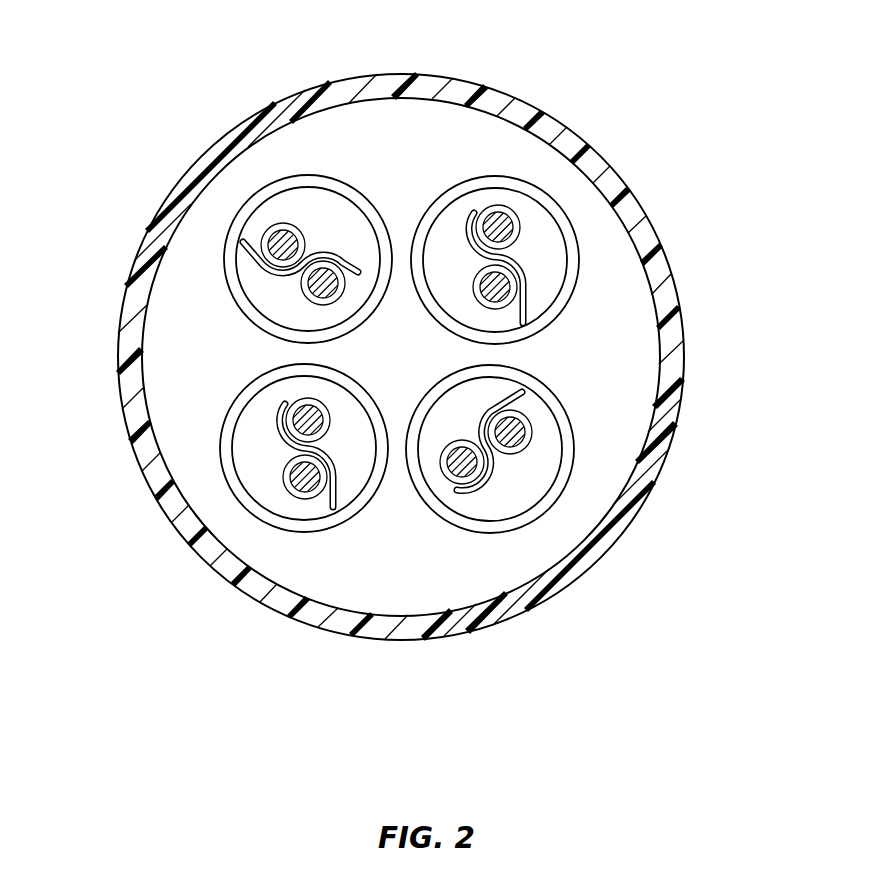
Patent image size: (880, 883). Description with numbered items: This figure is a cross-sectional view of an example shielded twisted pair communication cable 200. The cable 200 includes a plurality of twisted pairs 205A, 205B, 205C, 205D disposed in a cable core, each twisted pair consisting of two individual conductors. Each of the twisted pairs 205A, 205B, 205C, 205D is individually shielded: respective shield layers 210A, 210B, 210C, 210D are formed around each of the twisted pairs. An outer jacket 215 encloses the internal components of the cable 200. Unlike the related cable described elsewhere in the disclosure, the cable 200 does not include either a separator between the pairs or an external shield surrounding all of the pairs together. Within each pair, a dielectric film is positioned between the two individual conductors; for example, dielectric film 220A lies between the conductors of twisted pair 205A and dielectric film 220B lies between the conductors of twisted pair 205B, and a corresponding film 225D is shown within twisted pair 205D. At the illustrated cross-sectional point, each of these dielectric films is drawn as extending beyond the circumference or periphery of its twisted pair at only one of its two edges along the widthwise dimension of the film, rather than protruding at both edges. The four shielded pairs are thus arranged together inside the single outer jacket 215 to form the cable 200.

The shielded twisted pair communication cable 200 is at (412, 373).
The outer jacket 215 is at (528, 97).
The shield layer 210A is at (584, 224).
The shield layer 210B is at (606, 451).
The shield layer 210C is at (202, 486).
The shield layer 210D is at (227, 221).
The twisted pair 205A is at (543, 278).
The twisted pair 205B is at (543, 450).
The twisted pair 205C is at (263, 457).
The twisted pair 205D is at (300, 215).
The dielectric film 220A is at (523, 260).
The dielectric film 220B is at (495, 477).
The separator D 225D is at (263, 267).